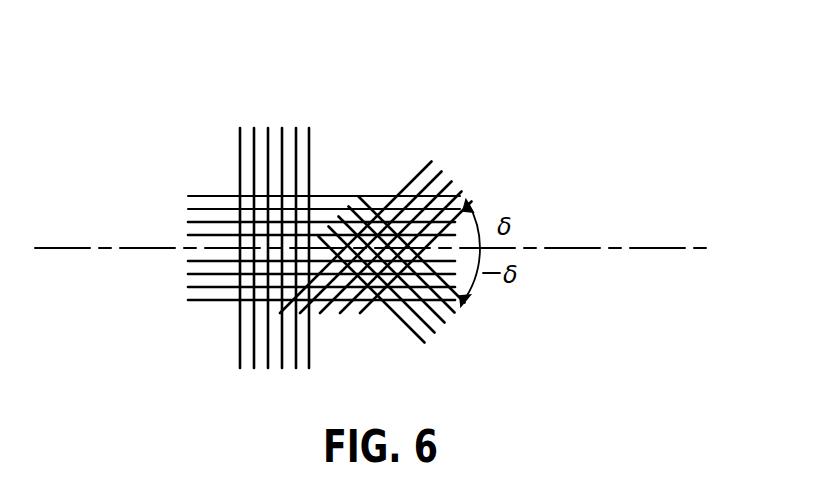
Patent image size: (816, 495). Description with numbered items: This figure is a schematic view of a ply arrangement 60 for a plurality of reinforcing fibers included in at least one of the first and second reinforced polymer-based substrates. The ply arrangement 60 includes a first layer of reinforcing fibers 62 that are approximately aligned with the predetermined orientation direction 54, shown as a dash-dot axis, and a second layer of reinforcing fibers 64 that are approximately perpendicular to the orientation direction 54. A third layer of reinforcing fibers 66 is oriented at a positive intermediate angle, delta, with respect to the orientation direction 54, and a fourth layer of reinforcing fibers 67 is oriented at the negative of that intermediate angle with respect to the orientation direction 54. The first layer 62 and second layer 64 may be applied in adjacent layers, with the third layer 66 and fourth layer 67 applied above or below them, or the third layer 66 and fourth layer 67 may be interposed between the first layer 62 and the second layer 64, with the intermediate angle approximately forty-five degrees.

The predetermined orientation direction 54 is at (668, 247).
The ply arrangement 60 is at (507, 110).
The first layer of reinforcing fibers 62 is at (372, 196).
The second layer of reinforcing fibers 64 is at (239, 145).
The third layer of reinforcing fibers 66 is at (468, 200).
The fourth layer of reinforcing fibers 67 is at (424, 343).